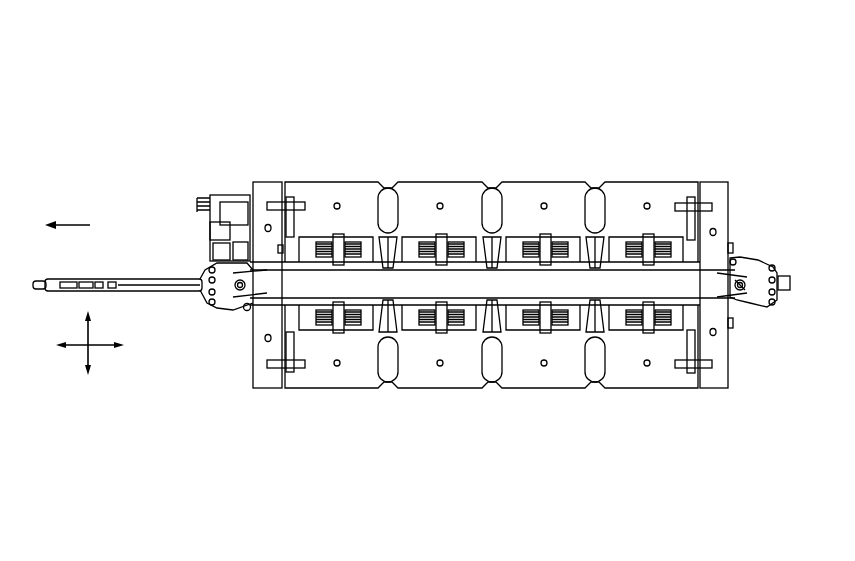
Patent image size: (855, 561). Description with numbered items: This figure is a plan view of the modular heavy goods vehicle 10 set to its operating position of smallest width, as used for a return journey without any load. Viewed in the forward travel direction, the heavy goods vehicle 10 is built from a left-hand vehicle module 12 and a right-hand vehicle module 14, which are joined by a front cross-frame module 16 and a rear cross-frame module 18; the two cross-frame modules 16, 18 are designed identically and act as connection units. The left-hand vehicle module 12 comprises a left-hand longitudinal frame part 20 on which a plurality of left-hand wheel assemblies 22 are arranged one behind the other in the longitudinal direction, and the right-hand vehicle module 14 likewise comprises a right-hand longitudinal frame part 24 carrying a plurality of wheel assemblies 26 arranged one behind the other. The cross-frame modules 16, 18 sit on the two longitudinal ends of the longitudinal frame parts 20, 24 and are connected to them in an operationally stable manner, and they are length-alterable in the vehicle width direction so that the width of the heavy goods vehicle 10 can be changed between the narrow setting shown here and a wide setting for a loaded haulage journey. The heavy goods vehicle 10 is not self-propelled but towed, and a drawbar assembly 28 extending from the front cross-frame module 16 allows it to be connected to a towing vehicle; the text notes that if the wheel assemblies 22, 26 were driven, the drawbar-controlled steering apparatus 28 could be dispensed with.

The heavy goods vehicle 10 is at (146, 101).
The left-hand vehicle module 12 is at (630, 370).
The right-hand vehicle module 14 is at (626, 205).
The front cross-frame module 16 is at (272, 187).
The rear cross-frame module 18 is at (712, 194).
The left-hand longitudinal frame part 20 is at (528, 370).
The left-hand wheel assemblies 22 is at (352, 325).
The right-hand longitudinal frame part 24 is at (525, 207).
The wheel assemblies 26 is at (352, 247).
The drawbar assembly 28 is at (128, 285).